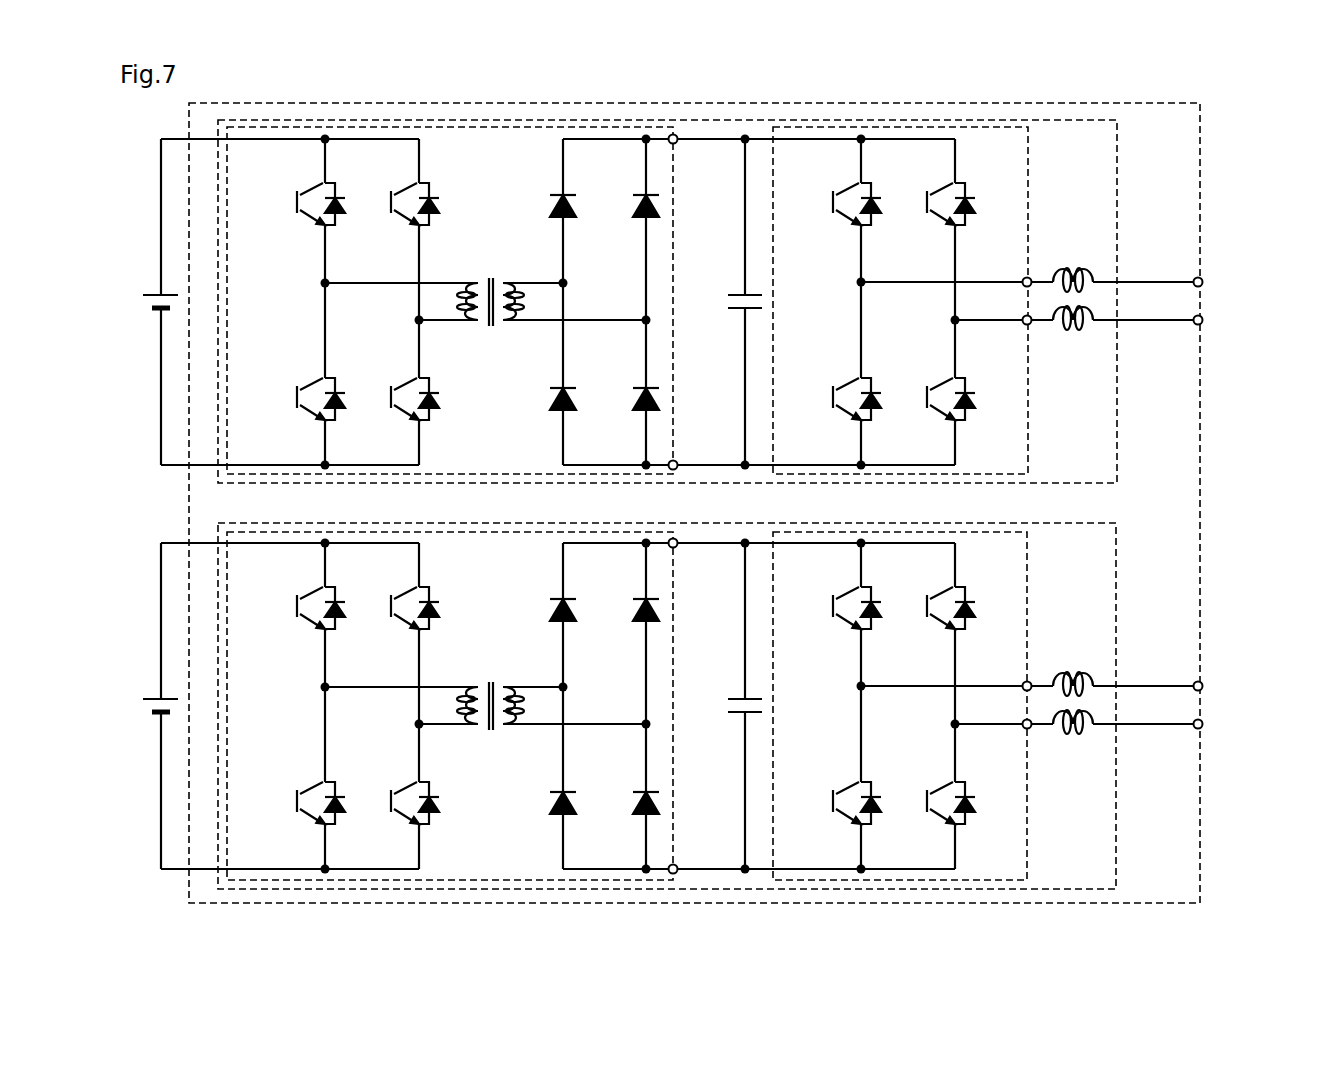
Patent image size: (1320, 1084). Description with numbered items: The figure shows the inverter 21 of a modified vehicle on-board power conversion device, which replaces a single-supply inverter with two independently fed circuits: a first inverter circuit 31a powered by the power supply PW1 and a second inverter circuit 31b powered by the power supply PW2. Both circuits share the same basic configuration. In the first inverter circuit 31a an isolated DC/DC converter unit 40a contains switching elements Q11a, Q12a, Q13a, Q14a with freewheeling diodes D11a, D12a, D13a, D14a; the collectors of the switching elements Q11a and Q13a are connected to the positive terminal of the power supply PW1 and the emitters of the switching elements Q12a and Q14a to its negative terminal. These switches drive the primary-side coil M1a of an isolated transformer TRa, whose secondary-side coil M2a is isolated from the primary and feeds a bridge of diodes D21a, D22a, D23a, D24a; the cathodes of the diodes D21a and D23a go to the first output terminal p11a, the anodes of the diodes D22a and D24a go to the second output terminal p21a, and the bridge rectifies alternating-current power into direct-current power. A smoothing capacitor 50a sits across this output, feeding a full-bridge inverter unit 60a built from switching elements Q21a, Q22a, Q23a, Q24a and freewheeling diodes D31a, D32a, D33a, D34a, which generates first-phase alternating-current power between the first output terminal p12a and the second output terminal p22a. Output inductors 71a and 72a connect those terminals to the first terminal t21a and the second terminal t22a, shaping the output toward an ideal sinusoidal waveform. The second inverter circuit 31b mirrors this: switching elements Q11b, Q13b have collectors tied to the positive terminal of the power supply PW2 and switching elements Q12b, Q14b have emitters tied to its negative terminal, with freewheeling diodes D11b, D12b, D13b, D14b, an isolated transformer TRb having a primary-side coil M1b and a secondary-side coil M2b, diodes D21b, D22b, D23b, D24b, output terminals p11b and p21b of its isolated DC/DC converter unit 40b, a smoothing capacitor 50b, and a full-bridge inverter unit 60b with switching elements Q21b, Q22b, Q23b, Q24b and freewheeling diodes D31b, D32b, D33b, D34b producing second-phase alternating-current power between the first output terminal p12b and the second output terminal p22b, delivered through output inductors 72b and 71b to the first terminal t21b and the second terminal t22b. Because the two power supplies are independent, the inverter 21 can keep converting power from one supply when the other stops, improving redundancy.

The inverter 21 is at (1130, 102).
The first inverter circuit 31a is at (1117, 147).
The second inverter circuit 31b is at (704, 706).
The isolated DC/DC converter unit 40a is at (485, 127).
The isolated DC/DC converter unit 40b is at (450, 740).
The full-bridge inverter unit 60a is at (1030, 152).
The full-bridge inverter unit 60b is at (937, 706).
The smoothing capacitor 50a is at (734, 290).
The smoothing capacitor 50b is at (728, 706).
The output inductor 71a is at (1072, 268).
The output inductor 72a is at (1072, 336).
The output inductor 71b is at (1071, 749).
The output inductor 72b is at (1071, 658).
The power supply PW1 is at (152, 294).
The power supply PW2 is at (145, 706).
The isolated transformer TRa is at (491, 294).
The isolated transformer TRb is at (491, 698).
The primary-side coil M1a is at (466, 322).
The secondary-side coil M2a is at (515, 322).
The primary-side coil M1b is at (452, 728).
The secondary-side coil M2b is at (529, 728).
The switching element Q11a is at (297, 192).
The switching element Q12a is at (297, 387).
The switching element Q13a is at (391, 192).
The switching element Q14a is at (391, 387).
The switching element Q21a is at (833, 192).
The switching element Q22a is at (833, 387).
The switching element Q23a is at (927, 192).
The switching element Q24a is at (927, 387).
The switching element Q11b is at (298, 615).
The switching element Q12b is at (298, 778).
The switching element Q13b is at (393, 633).
The switching element Q14b is at (393, 796).
The switching element Q21b is at (835, 614).
The switching element Q22b is at (835, 777).
The switching element Q23b is at (929, 633).
The switching element Q24b is at (929, 796).
The freewheeling diode D11a is at (340, 202).
The freewheeling diode D12a is at (340, 397).
The freewheeling diode D13a is at (434, 202).
The freewheeling diode D14a is at (434, 397).
The diode D21a is at (551, 198).
The diode D22a is at (551, 411).
The diode D23a is at (639, 202).
The diode D24a is at (639, 395).
The freewheeling diode D31a is at (876, 202).
The freewheeling diode D32a is at (876, 397).
The freewheeling diode D33a is at (981, 202).
The freewheeling diode D34a is at (978, 398).
The freewheeling diode D11b is at (360, 630).
The freewheeling diode D12b is at (360, 826).
The freewheeling diode D13b is at (455, 630).
The freewheeling diode D14b is at (455, 826).
The diode D21b is at (523, 599).
The diode D22b is at (523, 806).
The diode D23b is at (619, 627).
The diode D24b is at (619, 822).
The freewheeling diode D31b is at (896, 631).
The freewheeling diode D32b is at (896, 826).
The freewheeling diode D33b is at (992, 587).
The freewheeling diode D34b is at (992, 828).
The first output terminal p11a is at (678, 144).
The second output terminal p21a is at (678, 461).
The first output terminal p12a is at (1023, 282).
The second output terminal p22a is at (1023, 322).
The first output terminal p11b is at (705, 565).
The second output terminal p21b is at (705, 848).
The first output terminal p12b is at (996, 667).
The second output terminal p22b is at (996, 748).
The first terminal t21a is at (1203, 282).
The second terminal t22a is at (1203, 320).
The first terminal t21b is at (1242, 689).
The second terminal t22b is at (1242, 727).